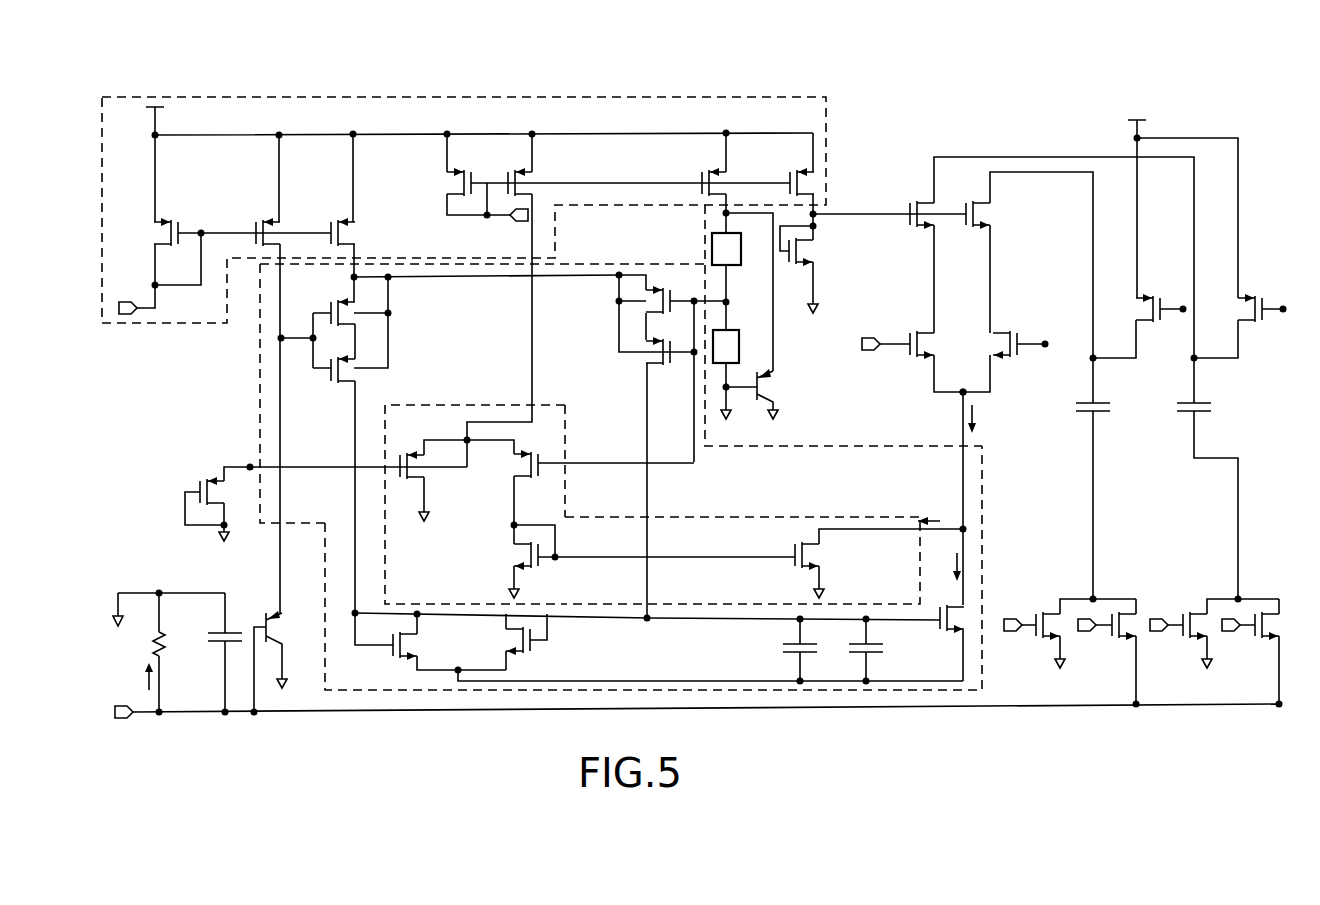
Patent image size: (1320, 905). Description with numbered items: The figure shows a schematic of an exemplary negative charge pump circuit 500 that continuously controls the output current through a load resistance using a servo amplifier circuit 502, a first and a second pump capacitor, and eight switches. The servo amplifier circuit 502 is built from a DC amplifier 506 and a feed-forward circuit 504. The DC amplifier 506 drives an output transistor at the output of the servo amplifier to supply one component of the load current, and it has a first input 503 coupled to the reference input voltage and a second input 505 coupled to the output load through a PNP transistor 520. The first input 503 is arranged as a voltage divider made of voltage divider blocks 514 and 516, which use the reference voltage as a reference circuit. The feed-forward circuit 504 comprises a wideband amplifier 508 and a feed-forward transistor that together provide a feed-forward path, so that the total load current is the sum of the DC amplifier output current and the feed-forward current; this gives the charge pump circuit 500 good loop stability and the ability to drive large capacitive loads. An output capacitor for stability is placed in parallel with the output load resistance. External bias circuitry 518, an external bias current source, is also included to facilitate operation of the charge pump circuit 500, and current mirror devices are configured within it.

The negative charge pump circuit 500 is at (404, 81).
The external bias circuitry 518 is at (102, 175).
The servo amplifier circuit 502 is at (580, 262).
The voltage divider block 514 is at (712, 245).
The first input 503 is at (696, 296).
The voltage divider block 516 is at (742, 342).
The second input 505 is at (313, 345).
The feed-forward circuit 504 is at (567, 490).
The wideband amplifier 508 is at (489, 519).
The DC amplifier 506 is at (643, 659).
The PNP transistor 520 is at (286, 616).